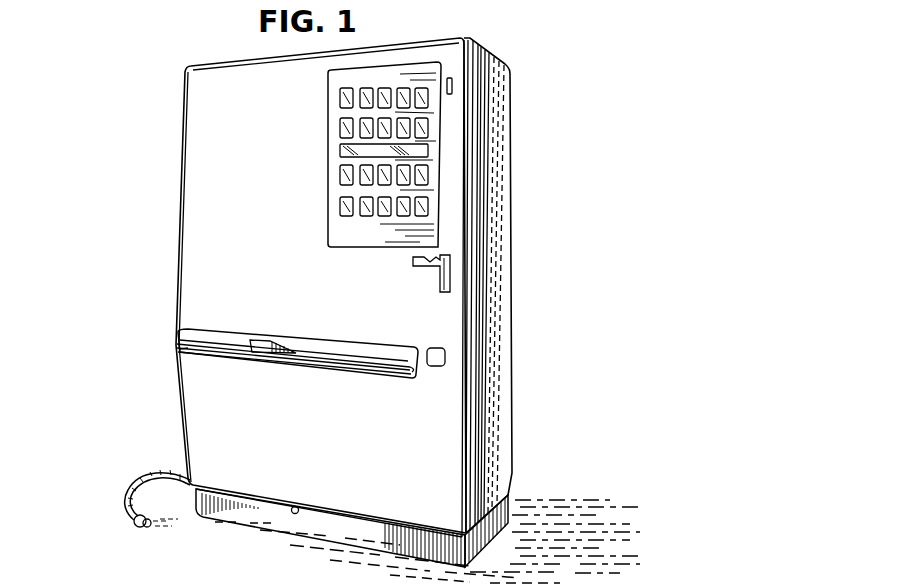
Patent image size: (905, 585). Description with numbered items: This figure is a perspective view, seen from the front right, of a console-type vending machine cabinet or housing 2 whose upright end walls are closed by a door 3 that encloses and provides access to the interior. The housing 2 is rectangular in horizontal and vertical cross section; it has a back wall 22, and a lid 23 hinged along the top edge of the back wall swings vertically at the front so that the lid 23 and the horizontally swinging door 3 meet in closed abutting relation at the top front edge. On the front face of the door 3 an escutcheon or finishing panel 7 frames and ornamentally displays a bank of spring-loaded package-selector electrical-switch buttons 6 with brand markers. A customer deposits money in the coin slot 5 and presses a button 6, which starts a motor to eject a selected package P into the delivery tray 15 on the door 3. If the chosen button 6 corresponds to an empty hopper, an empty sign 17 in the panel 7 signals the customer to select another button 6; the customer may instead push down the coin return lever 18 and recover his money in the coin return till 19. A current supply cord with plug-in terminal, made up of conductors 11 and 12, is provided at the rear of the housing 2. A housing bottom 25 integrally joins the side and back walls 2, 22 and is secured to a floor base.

The cabinet or housing 2 is at (165, 76).
The door 3 is at (202, 220).
The coin slot 5 is at (453, 87).
The package-selector electrical-switch button 6 is at (343, 125).
The escutcheon or finishing panel 7 is at (340, 227).
The feed wire 11 is at (157, 515).
The conductor 12 is at (143, 521).
The delivery tray 15 is at (348, 366).
The empty sign 17 is at (342, 153).
The coin return lever 18 is at (417, 267).
The coin return till 19 is at (437, 368).
The back wall 22 is at (514, 193).
The lid 23 is at (493, 60).
The housing bottom 25 is at (296, 506).
The package P is at (252, 345).